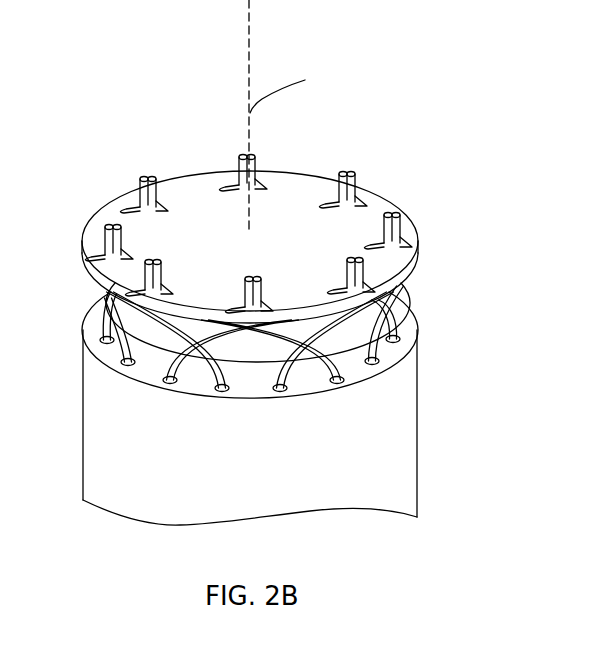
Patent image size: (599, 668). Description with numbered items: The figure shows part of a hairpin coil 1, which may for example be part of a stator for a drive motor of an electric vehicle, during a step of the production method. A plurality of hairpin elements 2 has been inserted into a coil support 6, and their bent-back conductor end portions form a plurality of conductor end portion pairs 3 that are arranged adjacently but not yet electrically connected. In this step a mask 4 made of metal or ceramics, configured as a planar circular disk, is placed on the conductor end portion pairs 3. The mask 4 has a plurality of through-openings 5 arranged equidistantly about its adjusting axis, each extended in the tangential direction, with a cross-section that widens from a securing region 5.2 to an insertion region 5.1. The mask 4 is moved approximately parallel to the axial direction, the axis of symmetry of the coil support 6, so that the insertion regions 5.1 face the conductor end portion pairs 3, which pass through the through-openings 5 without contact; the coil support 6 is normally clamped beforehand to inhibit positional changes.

The hairpin coil 1 is at (460, 164).
The hairpin elements 2 is at (388, 322).
The conductor end portion pairs 3 is at (158, 176).
The mask 4 is at (214, 247).
The through-openings 5 is at (133, 190).
The insertion region 5.1 is at (174, 190).
The securing region 5.2 is at (116, 205).
The coil support 6 is at (83, 374).